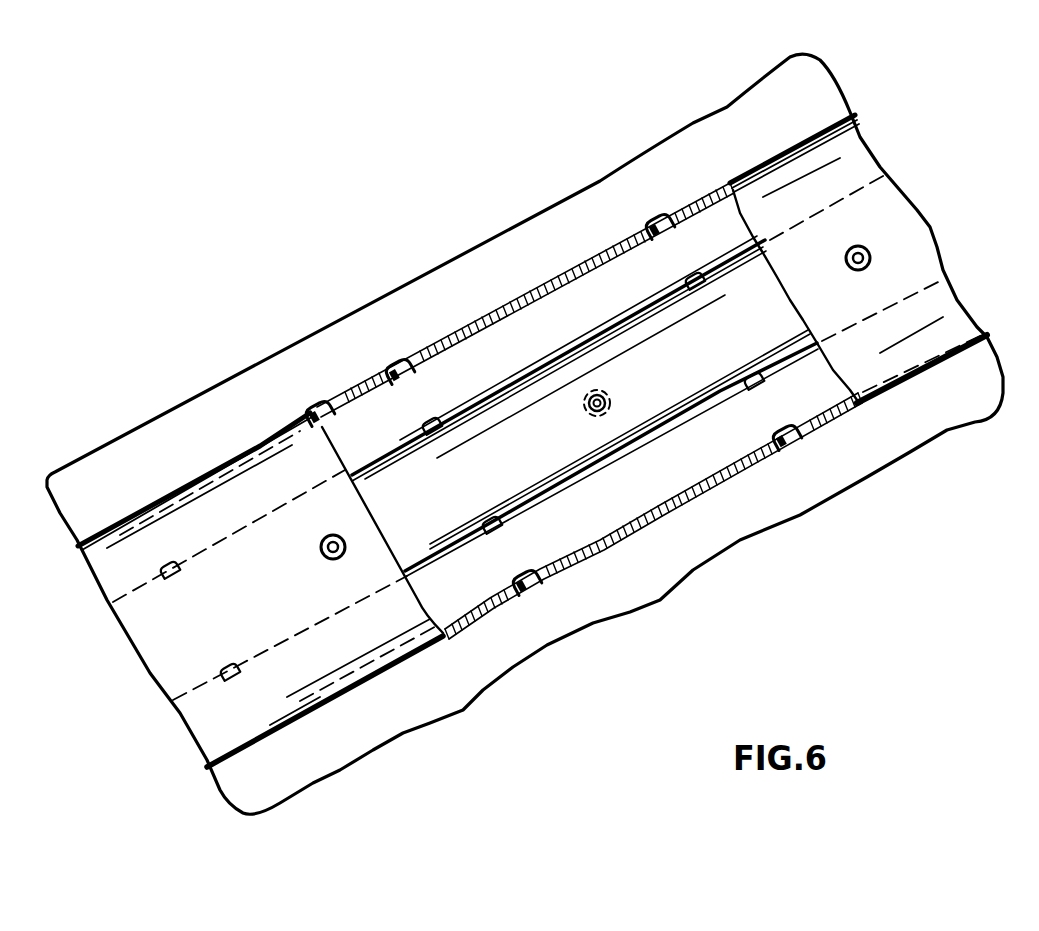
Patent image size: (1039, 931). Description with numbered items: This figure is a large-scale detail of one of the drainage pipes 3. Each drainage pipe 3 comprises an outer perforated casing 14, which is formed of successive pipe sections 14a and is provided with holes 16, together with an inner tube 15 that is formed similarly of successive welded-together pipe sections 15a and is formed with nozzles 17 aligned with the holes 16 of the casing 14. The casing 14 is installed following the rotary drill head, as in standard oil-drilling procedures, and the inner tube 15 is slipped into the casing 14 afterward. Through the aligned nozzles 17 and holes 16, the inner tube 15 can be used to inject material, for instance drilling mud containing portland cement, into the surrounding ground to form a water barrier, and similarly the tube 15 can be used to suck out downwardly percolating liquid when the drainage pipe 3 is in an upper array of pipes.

The drainage pipe 3 is at (472, 662).
The outer perforated casing 14 is at (846, 440).
The pipe section 14a is at (343, 727).
The inner tube 15 is at (697, 435).
The pipe section 15a is at (345, 712).
The hole 16 is at (333, 535).
The nozzle 17 is at (627, 660).